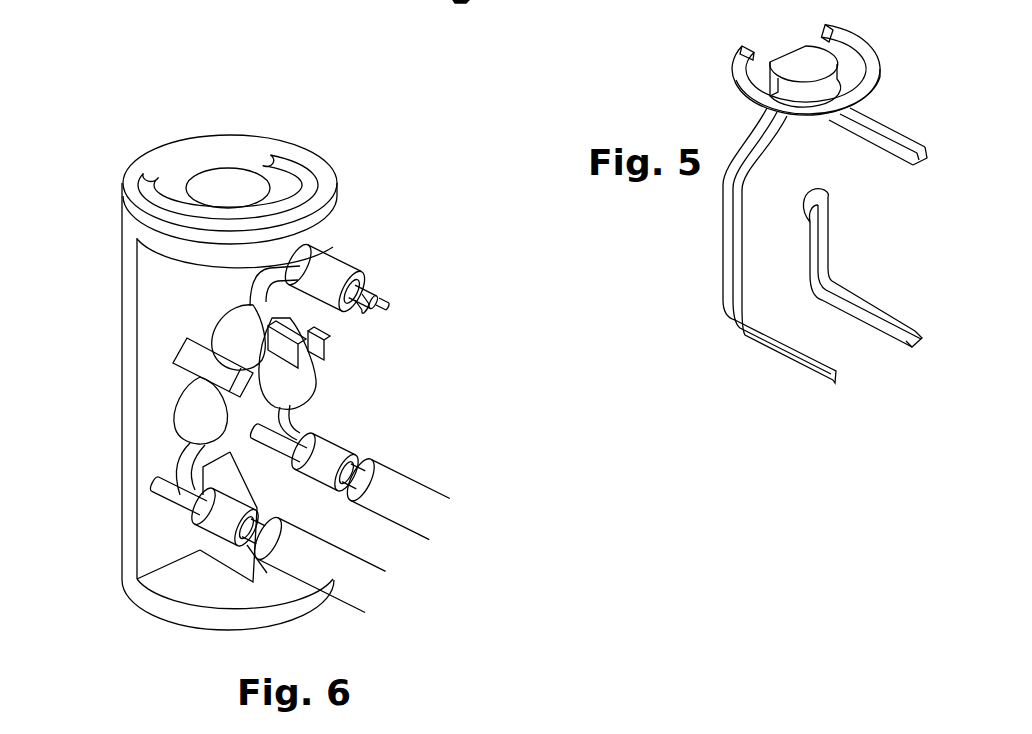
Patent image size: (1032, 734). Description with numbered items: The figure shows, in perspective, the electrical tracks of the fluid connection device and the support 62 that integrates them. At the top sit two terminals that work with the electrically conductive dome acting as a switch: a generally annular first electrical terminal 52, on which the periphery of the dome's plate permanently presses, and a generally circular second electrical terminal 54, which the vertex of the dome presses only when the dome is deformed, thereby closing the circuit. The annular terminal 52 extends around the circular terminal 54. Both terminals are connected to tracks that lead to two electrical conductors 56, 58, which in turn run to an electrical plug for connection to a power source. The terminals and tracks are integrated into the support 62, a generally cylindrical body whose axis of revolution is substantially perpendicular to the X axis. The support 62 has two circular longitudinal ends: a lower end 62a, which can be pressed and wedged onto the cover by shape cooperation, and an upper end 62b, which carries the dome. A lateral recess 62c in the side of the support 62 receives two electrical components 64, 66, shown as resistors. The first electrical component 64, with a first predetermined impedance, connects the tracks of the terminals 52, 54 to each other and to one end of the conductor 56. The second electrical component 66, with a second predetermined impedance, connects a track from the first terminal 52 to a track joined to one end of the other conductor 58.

In FIG. 6, the first electrical terminal 52 is at (307, 178).
In FIG. 5, the first electrical terminal 52 is at (872, 62).
In FIG. 6, the second electrical terminal 54 is at (238, 180).
In FIG. 5, the second electrical terminal 54 is at (798, 63).
In FIG. 6, the electrical conductor 56 is at (300, 556).
In FIG. 6, the electrical conductor 58 is at (400, 495).
In FIG. 6, the support 62 is at (98, 314).
In FIG. 6, the lower end 62a is at (203, 630).
In FIG. 6, the upper end 62b is at (187, 157).
In FIG. 6, the lateral recess 62c is at (407, 395).
In FIG. 6, the first electrical component 64 is at (190, 403).
In FIG. 6, the second electrical component 66 is at (300, 388).